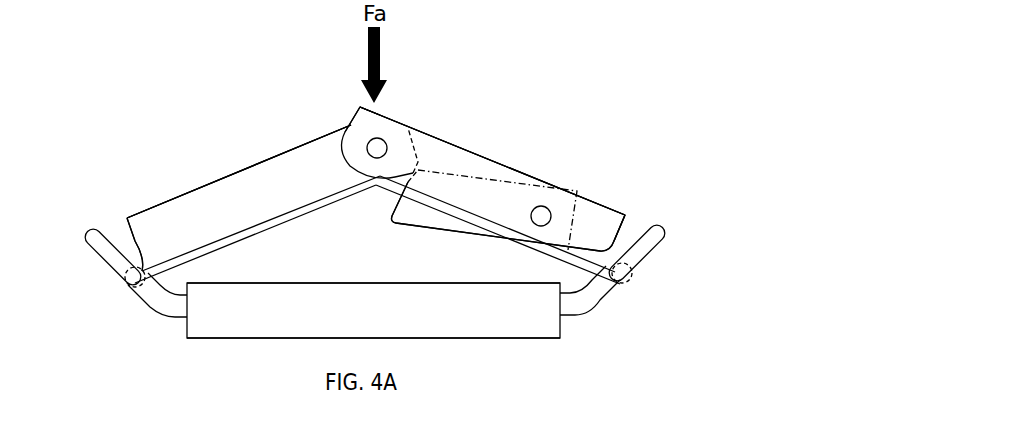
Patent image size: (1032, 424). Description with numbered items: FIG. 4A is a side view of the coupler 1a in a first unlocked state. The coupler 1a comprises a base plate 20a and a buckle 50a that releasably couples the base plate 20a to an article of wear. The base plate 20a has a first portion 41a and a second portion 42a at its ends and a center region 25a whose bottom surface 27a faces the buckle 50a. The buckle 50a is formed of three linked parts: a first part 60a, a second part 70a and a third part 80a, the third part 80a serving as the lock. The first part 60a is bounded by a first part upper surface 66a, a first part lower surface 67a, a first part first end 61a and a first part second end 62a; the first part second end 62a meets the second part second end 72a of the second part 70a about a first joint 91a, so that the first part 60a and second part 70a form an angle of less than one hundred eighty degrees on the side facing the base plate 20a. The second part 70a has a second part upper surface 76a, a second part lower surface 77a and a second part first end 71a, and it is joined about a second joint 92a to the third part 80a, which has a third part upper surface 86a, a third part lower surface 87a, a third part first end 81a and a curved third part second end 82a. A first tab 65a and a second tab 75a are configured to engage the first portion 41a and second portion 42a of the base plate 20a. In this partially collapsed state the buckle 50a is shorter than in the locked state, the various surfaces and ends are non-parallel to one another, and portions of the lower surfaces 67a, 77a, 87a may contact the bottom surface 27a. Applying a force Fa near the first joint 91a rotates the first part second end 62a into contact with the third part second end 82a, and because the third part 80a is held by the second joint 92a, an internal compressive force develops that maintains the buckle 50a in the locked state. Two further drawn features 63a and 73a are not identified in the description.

The coupler 1a is at (651, 70).
The base plate 20a is at (448, 341).
The center region 25a is at (230, 339).
The bottom surface 27a is at (309, 281).
The first portion 41a is at (84, 231).
The second portion 42a is at (666, 230).
The buckle 50a is at (216, 179).
The first part 60a is at (184, 195).
The first part first end 61a is at (123, 229).
The first part second end 62a is at (417, 145).
The first bend portion 63a is at (138, 290).
The first tab 65a is at (122, 278).
The first part upper surface 66a is at (254, 164).
The first part lower surface 67a is at (244, 239).
The second part 70a is at (482, 157).
The second part first end 71a is at (632, 229).
The second part second end 72a is at (352, 112).
The second bend portion 73a is at (611, 298).
The second tab 75a is at (632, 279).
The second part upper surface 76a is at (443, 139).
The second part lower surface 77a is at (572, 268).
The third part 80a is at (424, 229).
The third part first end 81a is at (605, 206).
The third part second end 82a is at (397, 200).
The third part upper surface 86a is at (506, 168).
The third part lower surface 87a is at (449, 236).
The first joint 91a is at (370, 139).
The second joint 92a is at (541, 205).